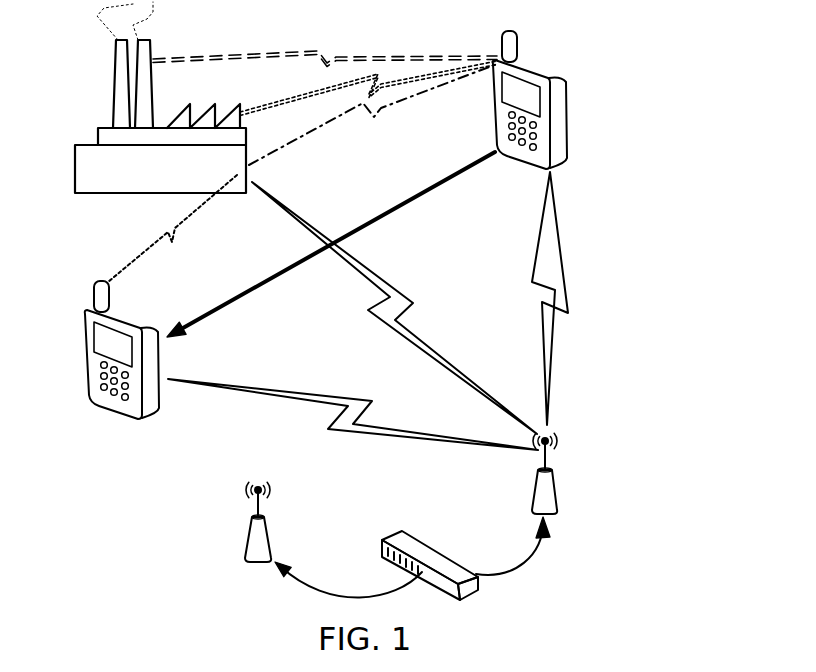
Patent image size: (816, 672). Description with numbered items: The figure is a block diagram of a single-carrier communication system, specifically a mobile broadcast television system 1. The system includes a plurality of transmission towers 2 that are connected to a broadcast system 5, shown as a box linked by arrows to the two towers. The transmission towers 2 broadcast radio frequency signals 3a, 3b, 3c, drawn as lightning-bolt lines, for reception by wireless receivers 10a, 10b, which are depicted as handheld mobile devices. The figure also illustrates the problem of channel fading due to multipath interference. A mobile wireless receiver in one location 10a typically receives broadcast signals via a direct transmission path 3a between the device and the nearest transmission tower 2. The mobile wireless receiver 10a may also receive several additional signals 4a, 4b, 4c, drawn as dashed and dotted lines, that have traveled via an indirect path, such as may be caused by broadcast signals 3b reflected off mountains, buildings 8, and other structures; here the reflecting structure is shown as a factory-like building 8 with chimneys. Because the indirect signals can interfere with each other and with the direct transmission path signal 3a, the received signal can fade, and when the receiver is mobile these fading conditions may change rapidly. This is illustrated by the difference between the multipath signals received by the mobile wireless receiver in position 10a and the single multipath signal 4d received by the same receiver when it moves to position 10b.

The mobile broadcast television system 1 is at (642, 302).
The transmission tower 2 is at (553, 468).
The direct transmission path 3a is at (560, 244).
The broadcast signal 3b is at (416, 300).
The radio frequency signal 3c is at (372, 401).
The multipath signal 4a is at (373, 113).
The multipath signal 4b is at (310, 92).
The multipath signal 4c is at (322, 50).
The multipath signal 4d is at (167, 233).
The broadcast system 5 is at (436, 549).
The building 8 is at (75, 172).
The wireless receiver 10a is at (567, 110).
The wireless receiver 10b is at (136, 311).